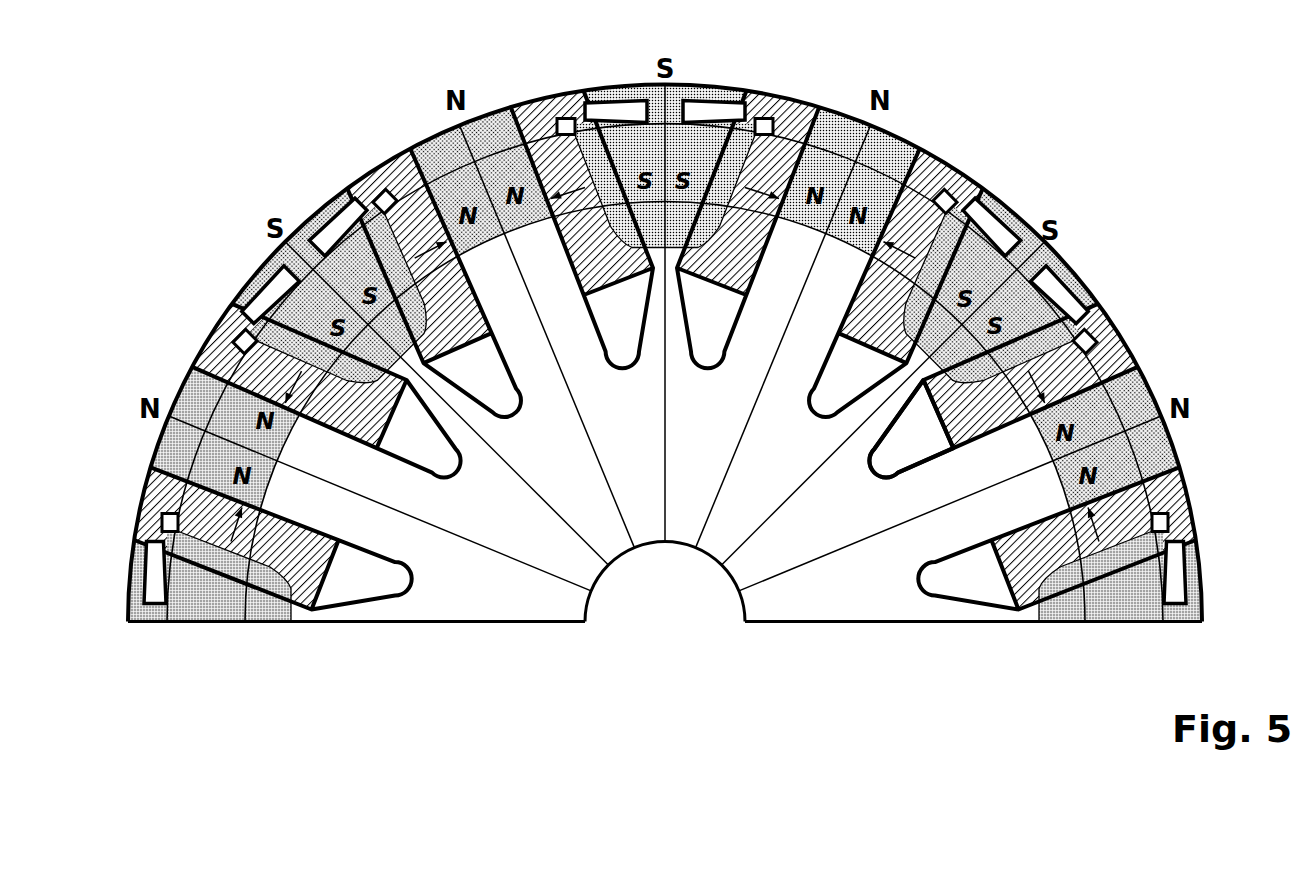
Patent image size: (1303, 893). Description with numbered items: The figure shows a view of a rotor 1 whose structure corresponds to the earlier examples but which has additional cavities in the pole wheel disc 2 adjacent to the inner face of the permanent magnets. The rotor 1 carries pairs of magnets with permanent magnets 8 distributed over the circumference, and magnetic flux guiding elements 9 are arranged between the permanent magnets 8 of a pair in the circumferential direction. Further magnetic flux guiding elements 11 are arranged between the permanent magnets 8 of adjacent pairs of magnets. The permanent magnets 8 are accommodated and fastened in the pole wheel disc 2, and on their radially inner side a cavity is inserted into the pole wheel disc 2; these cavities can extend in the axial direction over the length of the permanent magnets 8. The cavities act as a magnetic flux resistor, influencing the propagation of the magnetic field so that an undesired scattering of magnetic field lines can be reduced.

The rotor 1 is at (1064, 157).
The pole wheel disc 2 is at (835, 612).
The permanent magnets 8 is at (793, 128).
The magnetic flux guiding elements 9 is at (1050, 268).
The further magnetic flux guiding elements 11 is at (892, 157).